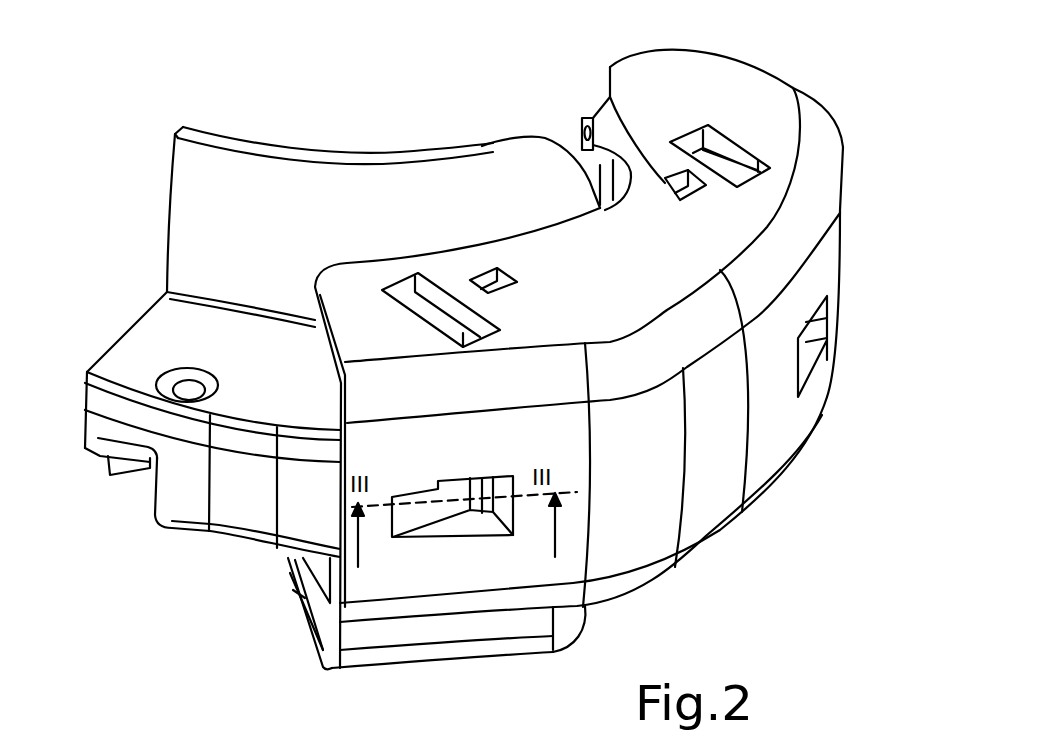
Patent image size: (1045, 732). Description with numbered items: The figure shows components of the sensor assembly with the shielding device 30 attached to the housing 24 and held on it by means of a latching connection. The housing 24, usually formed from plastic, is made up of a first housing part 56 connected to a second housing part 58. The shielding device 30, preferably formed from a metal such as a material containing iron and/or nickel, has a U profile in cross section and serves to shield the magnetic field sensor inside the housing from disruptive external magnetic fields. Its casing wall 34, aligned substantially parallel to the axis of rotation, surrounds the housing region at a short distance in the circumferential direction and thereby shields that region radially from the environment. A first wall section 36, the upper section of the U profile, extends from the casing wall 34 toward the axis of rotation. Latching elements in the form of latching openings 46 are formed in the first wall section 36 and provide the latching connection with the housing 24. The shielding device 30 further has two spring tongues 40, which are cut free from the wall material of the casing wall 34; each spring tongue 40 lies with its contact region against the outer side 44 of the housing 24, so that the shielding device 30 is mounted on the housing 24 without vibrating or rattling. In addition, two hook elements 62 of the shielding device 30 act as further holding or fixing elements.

The housing 24 is at (80, 367).
The shielding device 30 is at (806, 84).
The casing wall 34 is at (740, 448).
The first wall section 36 is at (742, 232).
The spring tongues 40 is at (823, 320).
The outer side 44 is at (480, 520).
The latching openings 46 is at (490, 280).
The first housing part 56 is at (163, 333).
The second housing part 58 is at (193, 502).
The hook elements 62 is at (413, 310).